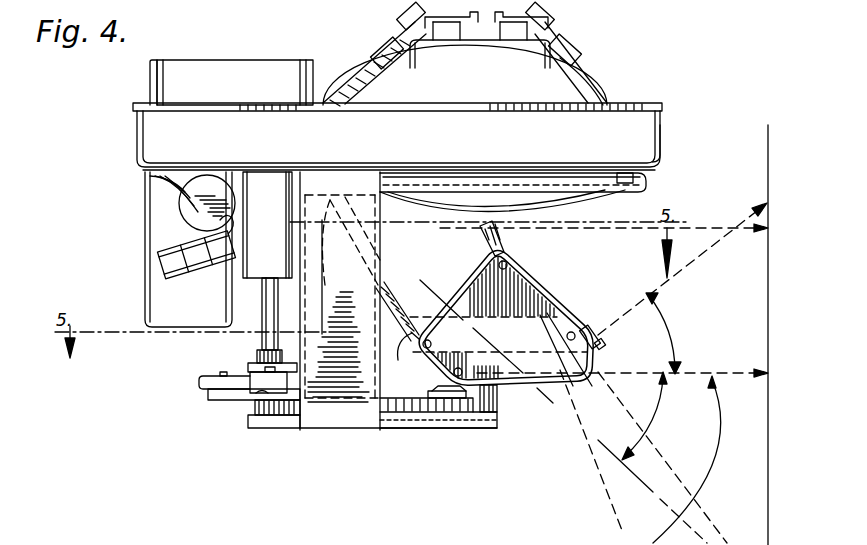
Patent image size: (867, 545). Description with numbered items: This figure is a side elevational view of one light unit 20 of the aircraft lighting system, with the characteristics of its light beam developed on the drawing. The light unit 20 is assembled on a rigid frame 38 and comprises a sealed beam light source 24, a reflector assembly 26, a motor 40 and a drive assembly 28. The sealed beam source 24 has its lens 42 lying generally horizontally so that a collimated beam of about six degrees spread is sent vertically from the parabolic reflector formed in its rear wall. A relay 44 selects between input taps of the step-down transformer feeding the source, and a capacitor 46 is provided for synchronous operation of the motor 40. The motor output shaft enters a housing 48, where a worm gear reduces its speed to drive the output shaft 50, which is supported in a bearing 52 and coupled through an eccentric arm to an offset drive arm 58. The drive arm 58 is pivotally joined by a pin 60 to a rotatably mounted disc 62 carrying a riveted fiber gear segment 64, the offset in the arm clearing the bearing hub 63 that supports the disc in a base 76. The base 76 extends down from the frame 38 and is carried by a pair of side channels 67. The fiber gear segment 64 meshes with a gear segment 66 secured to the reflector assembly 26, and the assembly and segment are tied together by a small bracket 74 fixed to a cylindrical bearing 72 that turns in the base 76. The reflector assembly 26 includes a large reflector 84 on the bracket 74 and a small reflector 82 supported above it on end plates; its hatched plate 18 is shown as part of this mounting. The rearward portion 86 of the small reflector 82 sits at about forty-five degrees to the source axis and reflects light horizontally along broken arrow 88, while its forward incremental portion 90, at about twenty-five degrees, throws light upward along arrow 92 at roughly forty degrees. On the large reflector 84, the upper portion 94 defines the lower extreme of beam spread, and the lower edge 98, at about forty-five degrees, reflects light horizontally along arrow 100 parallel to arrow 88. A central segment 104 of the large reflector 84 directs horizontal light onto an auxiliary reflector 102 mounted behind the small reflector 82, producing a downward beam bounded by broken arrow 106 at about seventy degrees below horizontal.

The hatched plate 18 is at (466, 300).
The light unit 20 is at (470, 143).
The sealed beam light source 24 is at (575, 78).
The reflector assembly 26 is at (512, 300).
The drive assembly 28 is at (292, 420).
The rigid frame 38 is at (660, 130).
The motor 40 is at (165, 312).
The lens 42 is at (258, 78).
The relay 44 is at (180, 200).
The capacitor 46 is at (162, 262).
The housing 48 is at (153, 62).
The output shaft 50 is at (262, 335).
The bearing 52 is at (262, 190).
The offset drive arm 58 is at (200, 384).
The pin 60 is at (255, 372).
The disc 62 is at (255, 378).
The bearing hub 63 is at (258, 400).
The fiber gear segment 64 is at (282, 415).
The gear segment 66 is at (416, 416).
The side channels 67 is at (358, 398).
The cylindrical bearing 72 is at (498, 418).
The bracket 74 is at (473, 413).
The base 76 is at (390, 428).
The small reflector 82 is at (593, 330).
The large reflector 84 is at (390, 290).
The rearward portion 86 is at (502, 236).
The arrow 88 is at (700, 228).
The forward incremental portion 90 is at (600, 340).
The arrow 92 is at (705, 255).
The upper portion 94 is at (342, 296).
The lower edge 98 is at (512, 400).
The arrow 100 is at (728, 373).
The auxiliary reflector 102 is at (557, 312).
The central segment 104 is at (404, 359).
The arrow 106 is at (732, 542).